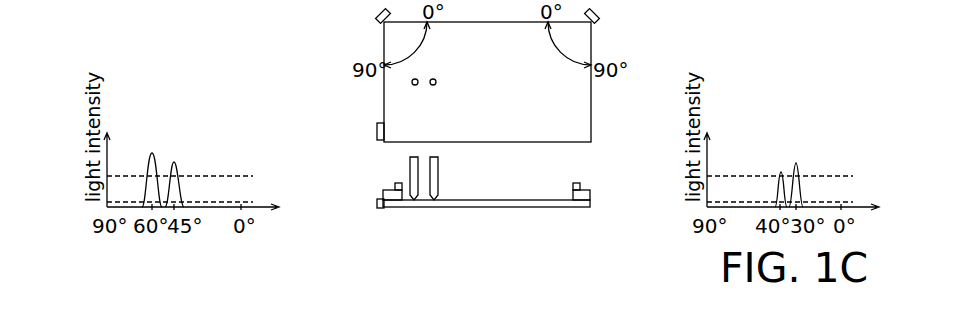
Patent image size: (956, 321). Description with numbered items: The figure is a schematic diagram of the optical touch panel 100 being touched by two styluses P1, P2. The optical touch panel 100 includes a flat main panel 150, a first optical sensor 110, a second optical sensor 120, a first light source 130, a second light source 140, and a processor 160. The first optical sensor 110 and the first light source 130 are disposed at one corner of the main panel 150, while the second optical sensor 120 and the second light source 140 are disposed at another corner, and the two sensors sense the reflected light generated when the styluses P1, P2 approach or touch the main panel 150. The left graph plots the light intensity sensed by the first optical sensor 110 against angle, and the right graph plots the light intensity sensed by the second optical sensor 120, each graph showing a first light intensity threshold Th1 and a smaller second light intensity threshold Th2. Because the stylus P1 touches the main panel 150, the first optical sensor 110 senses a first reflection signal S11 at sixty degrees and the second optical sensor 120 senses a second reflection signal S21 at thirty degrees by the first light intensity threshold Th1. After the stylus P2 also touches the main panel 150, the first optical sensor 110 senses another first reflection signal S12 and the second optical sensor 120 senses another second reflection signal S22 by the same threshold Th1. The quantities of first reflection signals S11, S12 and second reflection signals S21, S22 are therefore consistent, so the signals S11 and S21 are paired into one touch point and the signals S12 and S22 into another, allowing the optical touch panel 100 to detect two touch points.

The optical touch panel 100 is at (290, 21).
The first optical sensor 110 is at (373, 24).
The second optical sensor 120 is at (597, 27).
The first light source 130 is at (374, 13).
The second light source 140 is at (601, 13).
The main panel 150 is at (591, 97).
The processor 160 is at (377, 132).
The stylus P1 is at (412, 83).
The stylus P2 is at (433, 86).
The first reflection signal S11 is at (151, 153).
The first reflection signal S12 is at (176, 160).
The second reflection signal S21 is at (797, 162).
The second reflection signal S22 is at (780, 170).
The first light intensity threshold Th1 is at (237, 176).
The second light intensity threshold Th2 is at (237, 202).